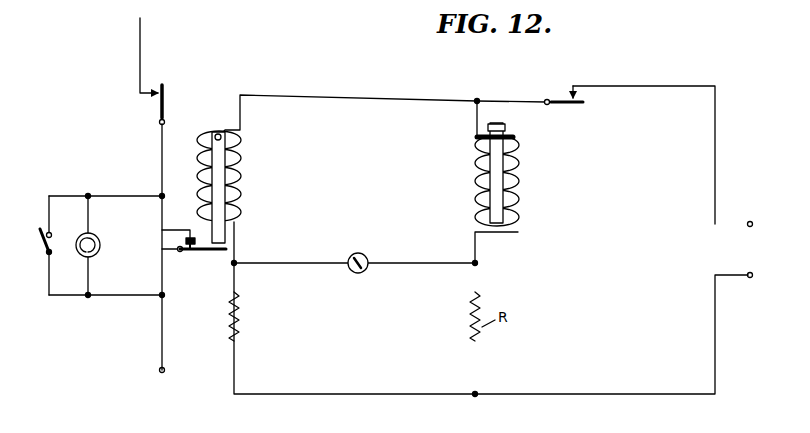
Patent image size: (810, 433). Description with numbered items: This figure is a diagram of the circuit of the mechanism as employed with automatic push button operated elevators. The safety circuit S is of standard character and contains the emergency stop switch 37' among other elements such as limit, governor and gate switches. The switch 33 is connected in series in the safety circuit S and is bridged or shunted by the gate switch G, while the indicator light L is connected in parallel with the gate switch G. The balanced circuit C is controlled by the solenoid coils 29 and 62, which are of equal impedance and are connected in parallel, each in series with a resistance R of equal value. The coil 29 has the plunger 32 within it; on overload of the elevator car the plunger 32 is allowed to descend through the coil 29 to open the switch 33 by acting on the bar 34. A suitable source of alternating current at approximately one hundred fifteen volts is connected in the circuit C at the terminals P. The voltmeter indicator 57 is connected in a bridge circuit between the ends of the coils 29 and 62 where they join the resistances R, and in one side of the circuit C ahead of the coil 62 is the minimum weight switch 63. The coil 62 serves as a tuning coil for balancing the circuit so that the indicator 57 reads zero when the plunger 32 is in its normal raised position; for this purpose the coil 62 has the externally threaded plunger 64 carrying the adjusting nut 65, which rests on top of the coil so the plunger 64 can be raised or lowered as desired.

The safety circuit S is at (136, 47).
The emergency stop switch 37' is at (184, 100).
The gate switch G is at (42, 248).
The indicator light L is at (97, 241).
The switch 33 is at (186, 241).
The armature bar 34 is at (220, 253).
The solenoid coil 29 is at (241, 187).
The plunger 32 is at (219, 132).
The balanced circuit C is at (356, 95).
The voltmeter indicator 57 is at (358, 273).
The resistance R is at (241, 321).
The solenoid coil 62 is at (520, 193).
The plunger 64 is at (503, 127).
The adjusting nut 65 is at (478, 137).
The minimum weight switch 63 is at (577, 105).
The source of A. C. P is at (726, 219).